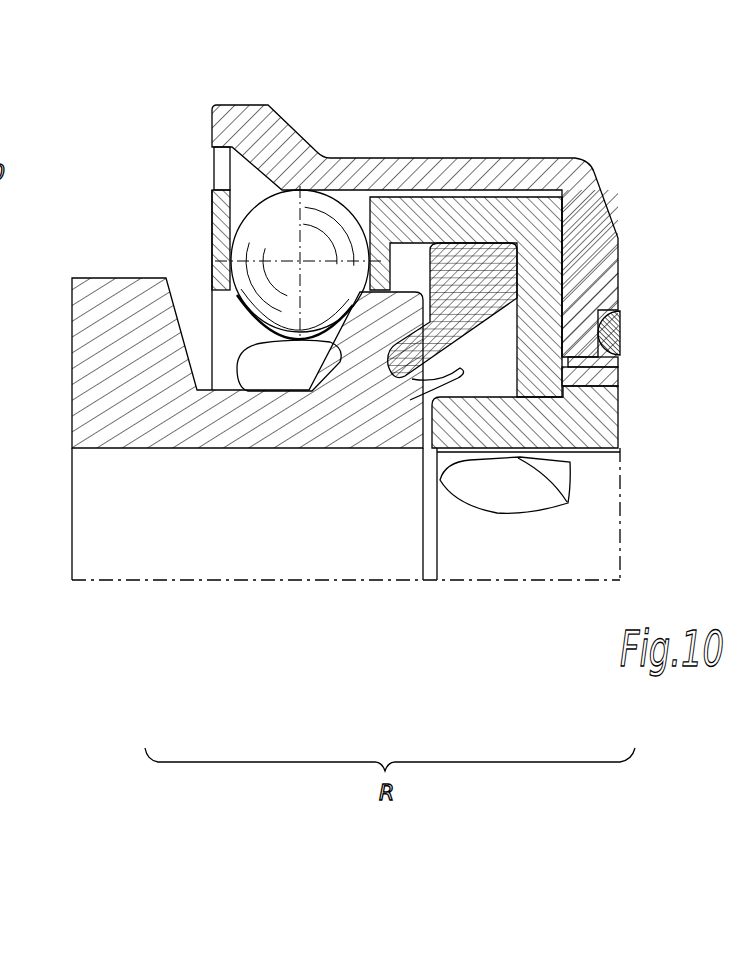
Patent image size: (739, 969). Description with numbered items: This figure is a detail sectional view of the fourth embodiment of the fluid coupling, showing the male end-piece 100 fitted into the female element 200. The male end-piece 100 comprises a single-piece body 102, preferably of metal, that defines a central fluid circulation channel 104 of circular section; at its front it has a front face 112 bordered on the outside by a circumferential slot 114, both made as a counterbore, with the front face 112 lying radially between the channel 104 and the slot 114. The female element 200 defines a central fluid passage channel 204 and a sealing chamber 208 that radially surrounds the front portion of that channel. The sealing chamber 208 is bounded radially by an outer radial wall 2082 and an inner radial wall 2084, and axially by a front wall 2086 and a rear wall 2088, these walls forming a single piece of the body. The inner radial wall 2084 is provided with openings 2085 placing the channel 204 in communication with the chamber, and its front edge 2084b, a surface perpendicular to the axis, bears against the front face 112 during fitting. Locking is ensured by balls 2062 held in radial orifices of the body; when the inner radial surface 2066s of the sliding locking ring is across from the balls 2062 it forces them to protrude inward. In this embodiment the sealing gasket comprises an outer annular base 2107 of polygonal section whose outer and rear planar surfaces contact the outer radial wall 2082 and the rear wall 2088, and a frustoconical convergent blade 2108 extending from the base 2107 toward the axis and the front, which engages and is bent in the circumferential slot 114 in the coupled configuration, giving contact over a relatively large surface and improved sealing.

The male end-piece 100 is at (166, 626).
The single-piece body 102 is at (107, 418).
The central fluid circulation channel 104 is at (346, 514).
The front face 112 is at (587, 405).
The circumferential slot 114 is at (443, 410).
The female element 200 is at (548, 625).
The central fluid passage channel 204 is at (528, 514).
The sealing chamber 208 is at (407, 258).
The balls 2062 is at (263, 225).
The inner radial surface of the locking ring 2066s is at (293, 203).
The outer radial wall 2082 is at (455, 215).
The inner radial wall 2084 is at (470, 408).
The front edge of the inner radial wall 2084b is at (420, 440).
The openings 2085 is at (492, 493).
The front wall 2086 is at (330, 220).
The rear wall 2088 is at (540, 275).
The outer annular base 2107 is at (405, 369).
The blade 2108 is at (570, 362).